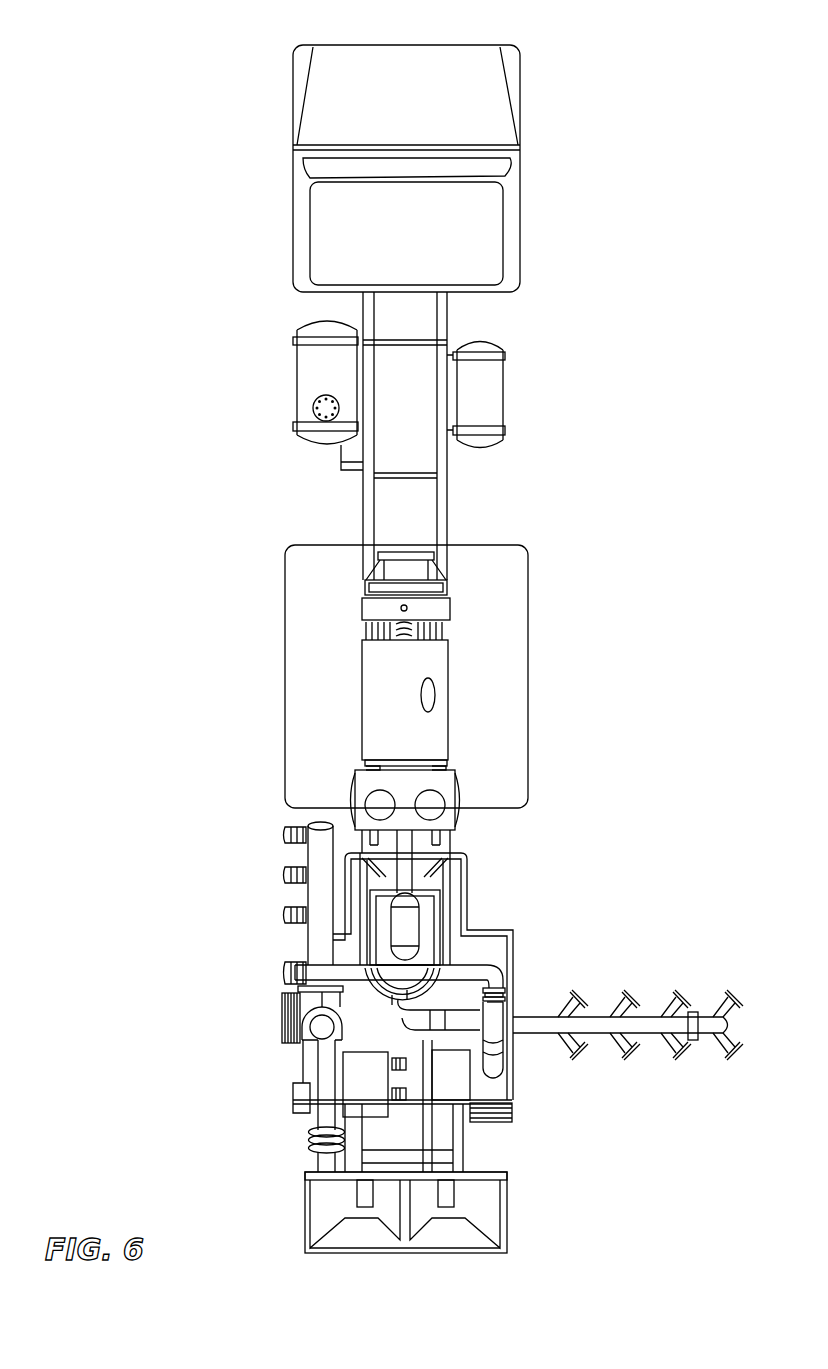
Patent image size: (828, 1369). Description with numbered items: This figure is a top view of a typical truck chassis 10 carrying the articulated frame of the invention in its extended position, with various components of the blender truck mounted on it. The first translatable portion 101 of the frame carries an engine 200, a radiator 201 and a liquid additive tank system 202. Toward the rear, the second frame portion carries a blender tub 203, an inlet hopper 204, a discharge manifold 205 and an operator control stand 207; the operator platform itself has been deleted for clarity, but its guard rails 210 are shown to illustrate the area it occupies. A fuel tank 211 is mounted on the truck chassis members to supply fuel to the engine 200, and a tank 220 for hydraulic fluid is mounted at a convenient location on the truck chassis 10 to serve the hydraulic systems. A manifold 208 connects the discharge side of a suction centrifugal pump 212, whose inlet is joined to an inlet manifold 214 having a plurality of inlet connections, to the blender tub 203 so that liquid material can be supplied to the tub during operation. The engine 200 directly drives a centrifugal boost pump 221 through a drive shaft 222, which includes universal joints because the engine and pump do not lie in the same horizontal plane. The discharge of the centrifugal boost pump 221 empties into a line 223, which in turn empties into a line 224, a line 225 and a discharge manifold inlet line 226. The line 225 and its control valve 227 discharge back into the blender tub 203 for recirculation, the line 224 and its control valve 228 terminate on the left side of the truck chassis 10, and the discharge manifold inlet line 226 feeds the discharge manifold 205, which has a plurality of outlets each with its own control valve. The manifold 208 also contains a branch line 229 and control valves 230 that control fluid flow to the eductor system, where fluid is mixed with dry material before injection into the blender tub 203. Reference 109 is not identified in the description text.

The truck chassis 10 is at (564, 76).
The first translatable portion 101 is at (458, 553).
The housing frame 109 is at (445, 924).
The engine 200 is at (440, 668).
The radiator 201 is at (368, 610).
The liquid additive tank system 202 is at (445, 785).
The blender tub 203 is at (455, 1165).
The inlet hopper 204 is at (363, 1243).
The discharge manifold 205 is at (587, 1025).
The operator control stand 207 is at (450, 1085).
The manifold 208 is at (327, 1165).
The guard rails 210 is at (510, 938).
The fuel tank 211 is at (497, 386).
The suction centrifugal pump 212 is at (318, 1003).
The inlet manifold 214 is at (313, 898).
The tank 220 is at (310, 372).
The centrifugal boost pump 221 is at (450, 978).
The drive shaft 222 is at (405, 866).
The line 223 is at (458, 1020).
The line 224 is at (500, 977).
The line 225 is at (457, 1162).
The discharge manifold inlet line 226 is at (493, 1053).
The control valve 227 is at (468, 1065).
The control valve 228 is at (505, 990).
The branch line 229 is at (430, 1140).
The control valves 230 is at (410, 1118).